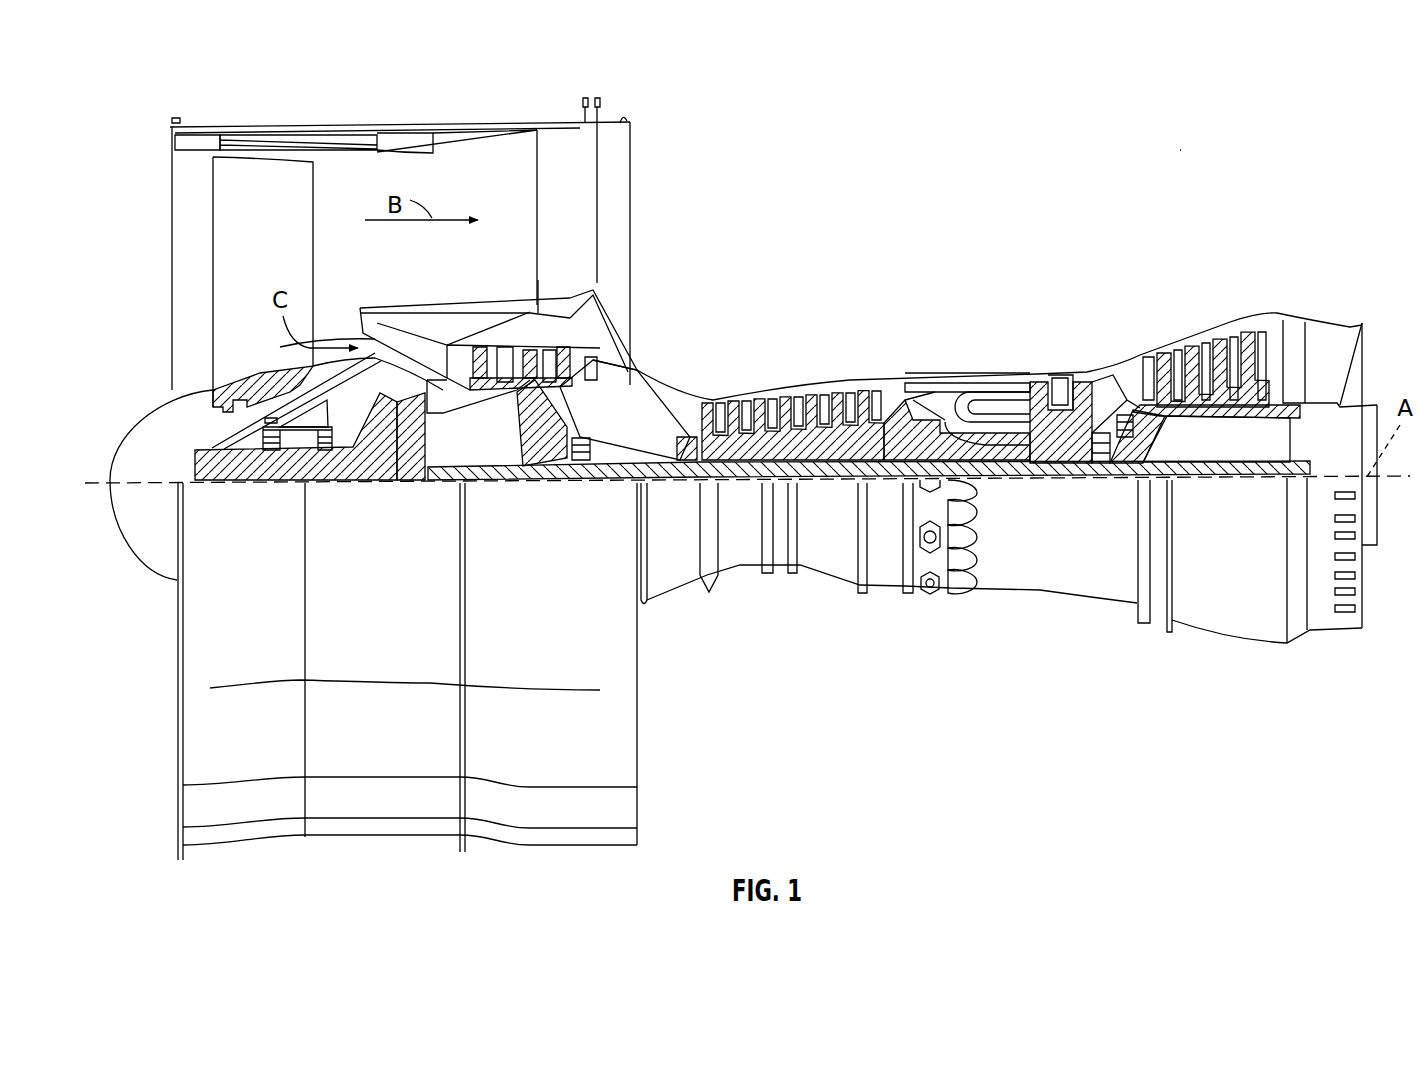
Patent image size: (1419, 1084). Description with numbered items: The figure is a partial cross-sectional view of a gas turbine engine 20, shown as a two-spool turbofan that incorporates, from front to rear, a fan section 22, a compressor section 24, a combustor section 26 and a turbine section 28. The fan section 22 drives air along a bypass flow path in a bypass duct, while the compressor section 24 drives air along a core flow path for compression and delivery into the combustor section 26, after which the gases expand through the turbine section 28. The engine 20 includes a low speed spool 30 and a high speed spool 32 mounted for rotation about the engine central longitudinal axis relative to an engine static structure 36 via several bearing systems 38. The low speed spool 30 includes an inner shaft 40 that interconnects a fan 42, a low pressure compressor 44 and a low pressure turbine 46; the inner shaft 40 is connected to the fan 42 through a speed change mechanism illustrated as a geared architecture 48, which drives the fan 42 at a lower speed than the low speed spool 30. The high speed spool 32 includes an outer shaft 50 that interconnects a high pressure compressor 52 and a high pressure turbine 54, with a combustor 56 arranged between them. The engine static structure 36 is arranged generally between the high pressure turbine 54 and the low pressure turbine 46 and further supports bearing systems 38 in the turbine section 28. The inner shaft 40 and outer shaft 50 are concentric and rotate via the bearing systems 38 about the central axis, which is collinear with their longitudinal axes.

The gas turbine engine 20 is at (1188, 152).
The fan section 22 is at (243, 125).
The compressor section 24 is at (815, 338).
The combustor section 26 is at (978, 342).
The turbine section 28 is at (1120, 320).
The low speed spool 30 is at (850, 482).
The high speed spool 32 is at (897, 427).
The engine static structure 36 is at (888, 598).
The bearing systems 38 is at (272, 452).
The inner shaft 40 is at (645, 473).
The fan 42 is at (282, 245).
The low pressure compressor 44 is at (548, 358).
The low pressure turbine 46 is at (1220, 333).
The geared architecture 48 is at (405, 448).
The outer shaft 50 is at (1010, 478).
The high pressure compressor 52 is at (810, 445).
The high pressure turbine 54 is at (1060, 375).
The combustor 56 is at (985, 397).